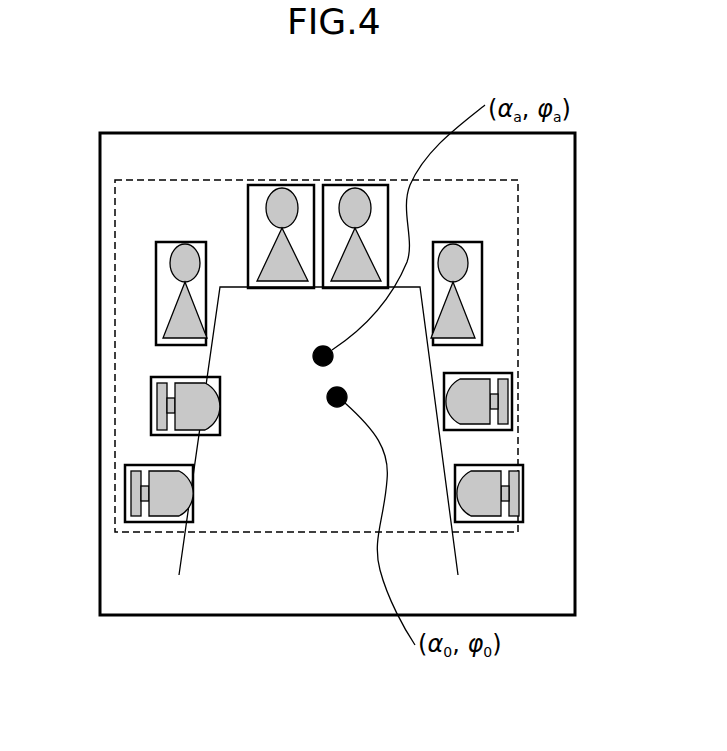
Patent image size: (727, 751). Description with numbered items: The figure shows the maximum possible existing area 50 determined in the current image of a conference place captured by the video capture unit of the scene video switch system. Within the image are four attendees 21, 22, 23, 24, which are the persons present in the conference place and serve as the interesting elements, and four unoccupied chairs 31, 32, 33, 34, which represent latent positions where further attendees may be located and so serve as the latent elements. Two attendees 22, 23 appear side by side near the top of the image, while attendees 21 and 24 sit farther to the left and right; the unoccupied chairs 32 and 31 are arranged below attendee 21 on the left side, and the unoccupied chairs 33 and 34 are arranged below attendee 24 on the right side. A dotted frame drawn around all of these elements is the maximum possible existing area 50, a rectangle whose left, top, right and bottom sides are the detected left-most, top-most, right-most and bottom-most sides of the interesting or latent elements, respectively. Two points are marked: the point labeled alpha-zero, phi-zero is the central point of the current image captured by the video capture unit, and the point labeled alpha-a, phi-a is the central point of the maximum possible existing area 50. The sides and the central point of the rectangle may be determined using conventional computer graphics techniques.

The attendee 21 is at (172, 263).
The attendee 22 is at (282, 187).
The attendee 23 is at (355, 187).
The attendee 24 is at (463, 263).
The unoccupied chair 31 is at (125, 492).
The unoccupied chair 32 is at (151, 406).
The unoccupied chair 33 is at (512, 395).
The unoccupied chair 34 is at (523, 483).
The maximum possible existing area 50 is at (458, 181).